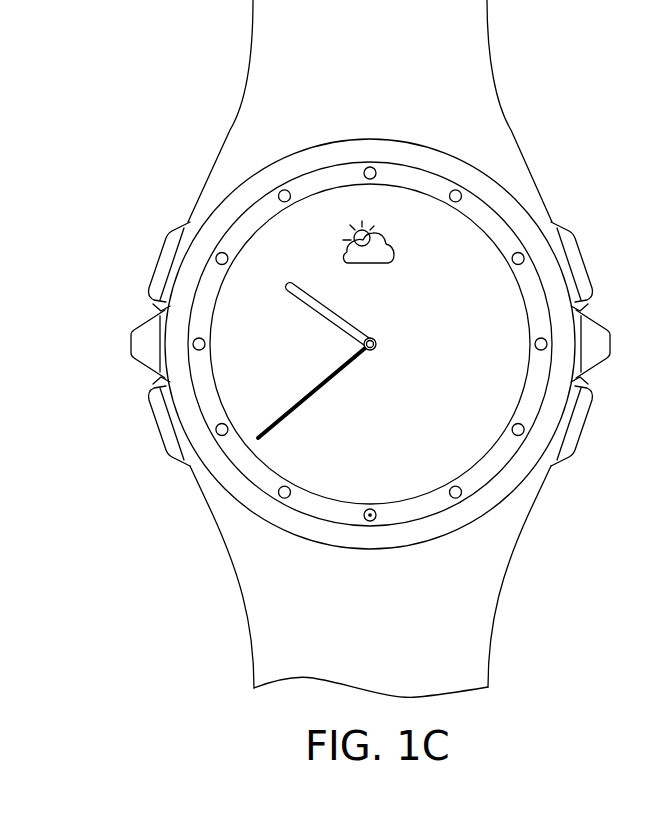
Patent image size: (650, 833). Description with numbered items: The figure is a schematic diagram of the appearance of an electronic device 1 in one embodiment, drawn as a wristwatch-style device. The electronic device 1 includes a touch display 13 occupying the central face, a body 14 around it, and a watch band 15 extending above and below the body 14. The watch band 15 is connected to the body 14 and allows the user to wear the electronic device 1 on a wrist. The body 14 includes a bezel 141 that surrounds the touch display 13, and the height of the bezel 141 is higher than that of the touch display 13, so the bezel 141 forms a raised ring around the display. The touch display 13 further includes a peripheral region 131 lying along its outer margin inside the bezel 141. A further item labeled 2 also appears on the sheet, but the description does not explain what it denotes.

The electronic device 1 is at (96, 84).
The touch display 13 is at (267, 253).
The peripheral region 131 is at (268, 205).
The body 14 is at (519, 198).
The bezel 141 is at (478, 183).
The watch band 15 is at (467, 43).
The external object 2 is at (458, 832).